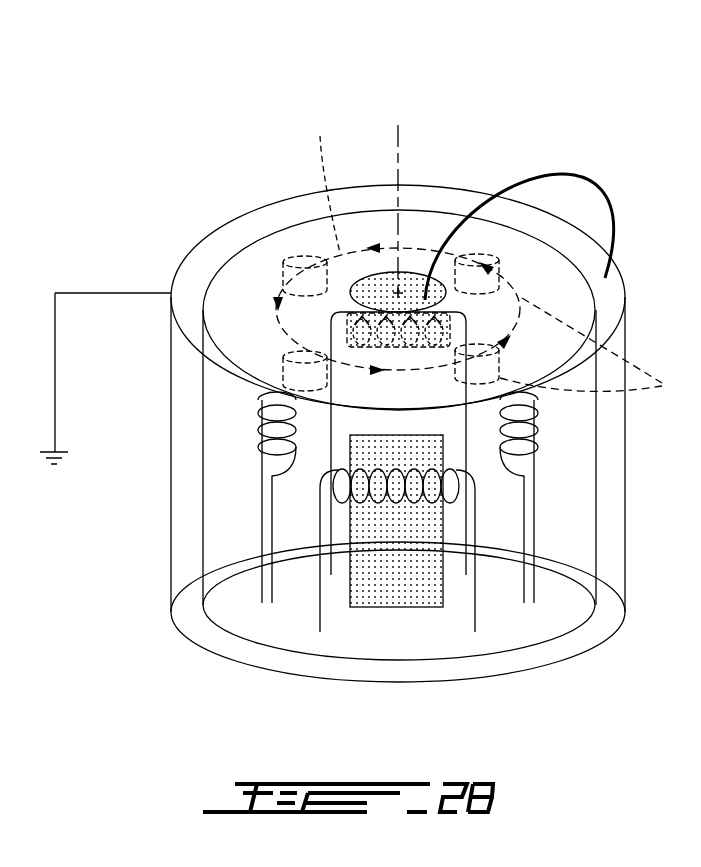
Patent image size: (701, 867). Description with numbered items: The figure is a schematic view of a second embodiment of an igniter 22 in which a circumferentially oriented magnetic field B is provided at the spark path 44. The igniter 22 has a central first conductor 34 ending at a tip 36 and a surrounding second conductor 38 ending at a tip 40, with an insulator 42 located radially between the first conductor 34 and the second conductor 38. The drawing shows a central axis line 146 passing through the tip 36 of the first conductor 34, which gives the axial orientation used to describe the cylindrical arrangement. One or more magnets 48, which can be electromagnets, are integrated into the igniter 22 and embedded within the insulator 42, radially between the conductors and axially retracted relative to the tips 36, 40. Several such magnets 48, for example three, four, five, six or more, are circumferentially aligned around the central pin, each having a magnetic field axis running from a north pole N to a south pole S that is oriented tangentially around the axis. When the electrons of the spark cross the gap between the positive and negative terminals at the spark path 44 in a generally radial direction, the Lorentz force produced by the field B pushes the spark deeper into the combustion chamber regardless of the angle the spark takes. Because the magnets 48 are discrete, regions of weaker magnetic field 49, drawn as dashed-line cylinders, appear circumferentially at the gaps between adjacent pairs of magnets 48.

The igniter 22 is at (592, 150).
The first conductor 34 is at (395, 587).
The tip of the first conductor 36 is at (422, 300).
The second conductor 38 is at (180, 540).
The tip of the second conductor 40 is at (280, 220).
The insulator 42 is at (250, 277).
The spark path 44 is at (553, 283).
The magnet 48 is at (257, 422).
The region of weaker magnetic field 49 is at (600, 348).
The central axis 146 is at (397, 147).